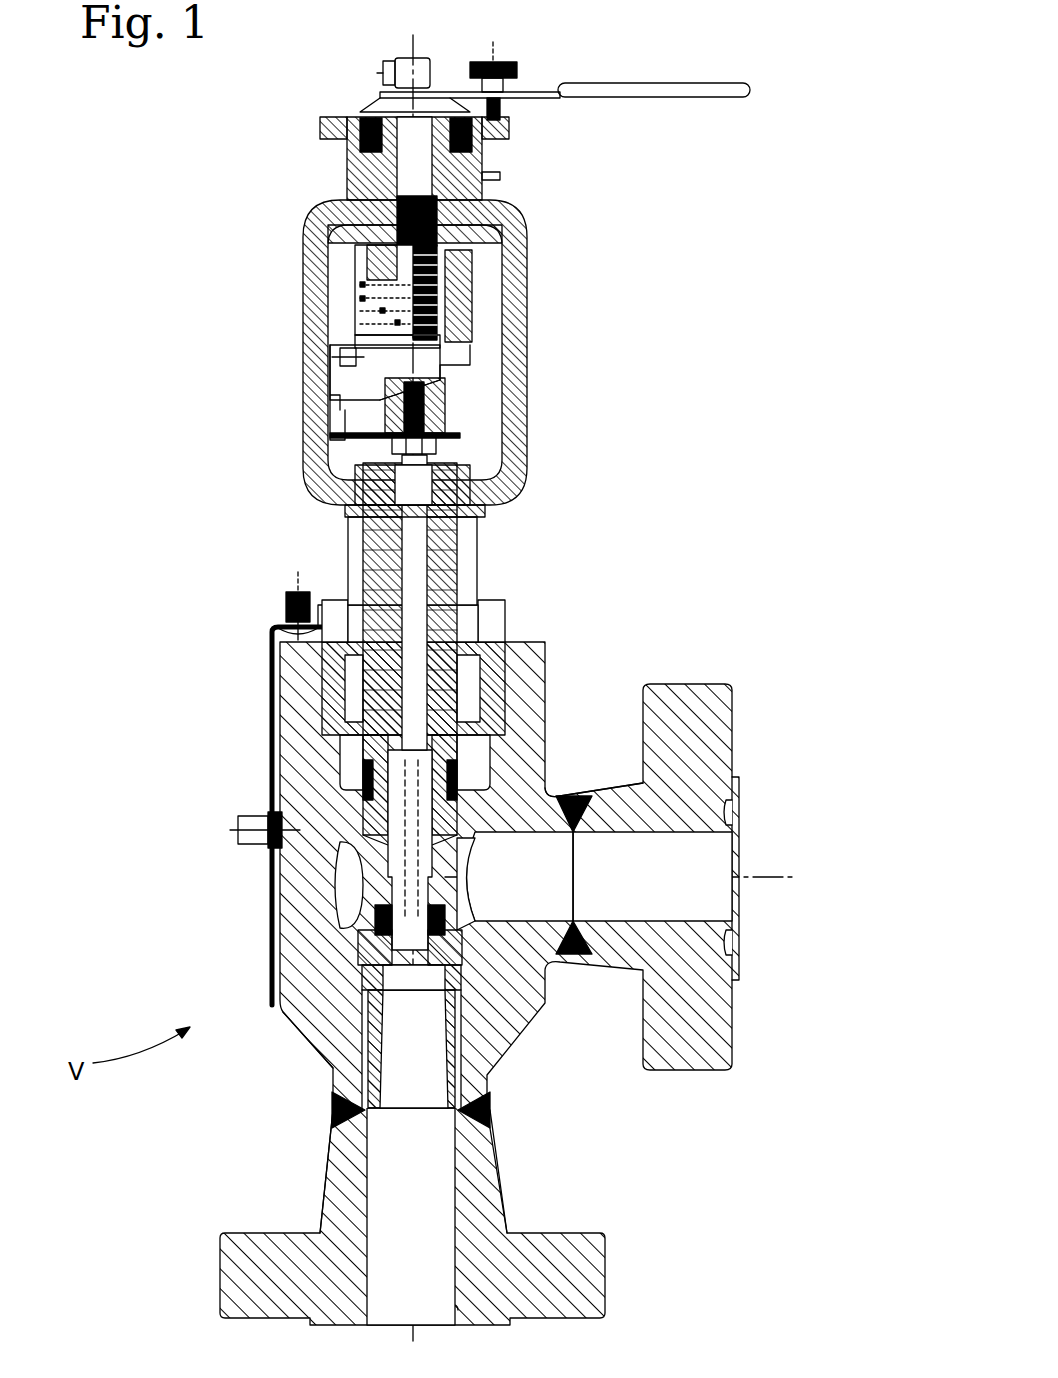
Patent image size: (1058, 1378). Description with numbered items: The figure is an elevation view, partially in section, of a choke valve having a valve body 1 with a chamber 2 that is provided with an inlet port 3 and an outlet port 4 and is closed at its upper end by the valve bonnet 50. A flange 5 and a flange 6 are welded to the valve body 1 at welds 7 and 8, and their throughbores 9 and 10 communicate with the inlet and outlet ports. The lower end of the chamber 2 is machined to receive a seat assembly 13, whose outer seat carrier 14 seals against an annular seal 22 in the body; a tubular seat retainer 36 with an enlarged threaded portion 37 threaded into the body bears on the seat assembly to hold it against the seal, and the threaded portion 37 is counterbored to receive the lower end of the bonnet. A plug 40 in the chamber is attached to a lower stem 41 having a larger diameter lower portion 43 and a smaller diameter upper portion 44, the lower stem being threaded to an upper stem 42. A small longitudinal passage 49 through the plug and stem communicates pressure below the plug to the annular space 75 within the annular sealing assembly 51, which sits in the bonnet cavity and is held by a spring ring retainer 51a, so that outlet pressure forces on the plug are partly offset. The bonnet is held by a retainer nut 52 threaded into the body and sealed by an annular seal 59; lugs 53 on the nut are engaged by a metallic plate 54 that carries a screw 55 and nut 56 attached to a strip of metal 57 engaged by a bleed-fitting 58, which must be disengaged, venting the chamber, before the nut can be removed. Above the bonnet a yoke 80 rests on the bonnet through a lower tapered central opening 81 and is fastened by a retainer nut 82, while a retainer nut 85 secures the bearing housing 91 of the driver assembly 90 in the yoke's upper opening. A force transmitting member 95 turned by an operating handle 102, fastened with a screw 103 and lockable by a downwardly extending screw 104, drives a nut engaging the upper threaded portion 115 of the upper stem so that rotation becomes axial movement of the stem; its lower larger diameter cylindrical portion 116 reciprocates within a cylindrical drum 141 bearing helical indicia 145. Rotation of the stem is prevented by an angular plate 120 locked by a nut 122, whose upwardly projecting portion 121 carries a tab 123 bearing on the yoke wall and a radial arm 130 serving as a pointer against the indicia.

The valve body 1 is at (292, 950).
The chamber 2 is at (350, 905).
The inlet port 3 is at (562, 865).
The outlet port 4 is at (492, 1160).
The flange 5 is at (672, 700).
The flange 6 is at (568, 1240).
The weld 7 is at (573, 797).
The weld 8 is at (483, 1108).
The throughbore 9 is at (700, 865).
The throughbore 10 is at (405, 1253).
The seat assembly 13 is at (270, 1028).
The outer seat carrier 14 is at (457, 1062).
The annular seal 22 is at (460, 1003).
The seat retainer 36 is at (340, 868).
The enlarged threaded portion 37 is at (528, 795).
The plug 40 is at (375, 935).
The lower stem 41 is at (470, 575).
The upper stem 42 is at (445, 412).
The larger diameter lower portion 43 is at (352, 892).
The smaller diameter upper portion 44 is at (400, 522).
The longitudinal passage 49 is at (418, 850).
The valve bonnet 50 is at (473, 600).
The annular sealing assembly 51 is at (505, 665).
The spring ring retainer 51a is at (372, 786).
The retainer nut 52 is at (495, 642).
The lugs 53 is at (503, 632).
The metallic plate 54 is at (335, 625).
The screw 55 is at (296, 592).
The nut 56 is at (285, 612).
The strip of metal 57 is at (273, 690).
The bleed-fitting 58 is at (245, 818).
The annular seal 59 is at (460, 790).
The annular space 75 is at (480, 745).
The yoke 80 is at (315, 255).
The lower tapered central opening 81 is at (477, 535).
The retainer nut 82 is at (475, 460).
The retainer nut 85 is at (520, 228).
The driver assembly 90 is at (348, 170).
The bearing housing 91 is at (500, 190).
The force transmitting member 95 is at (383, 95).
The operating handle 102 is at (660, 93).
The screw 103 is at (383, 72).
The downwardly extending screw 104 is at (497, 112).
The upper threaded portion 115 is at (473, 273).
The lower larger diameter cylindrical portion 116 is at (442, 365).
The angular plate 120 is at (335, 437).
The upwardly projecting portion 121 is at (340, 352).
The nut 122 is at (392, 450).
The tab 123 is at (335, 405).
The radial arm 130 is at (365, 322).
The cylindrical drum 141 is at (473, 305).
The indicia 145 is at (365, 292).